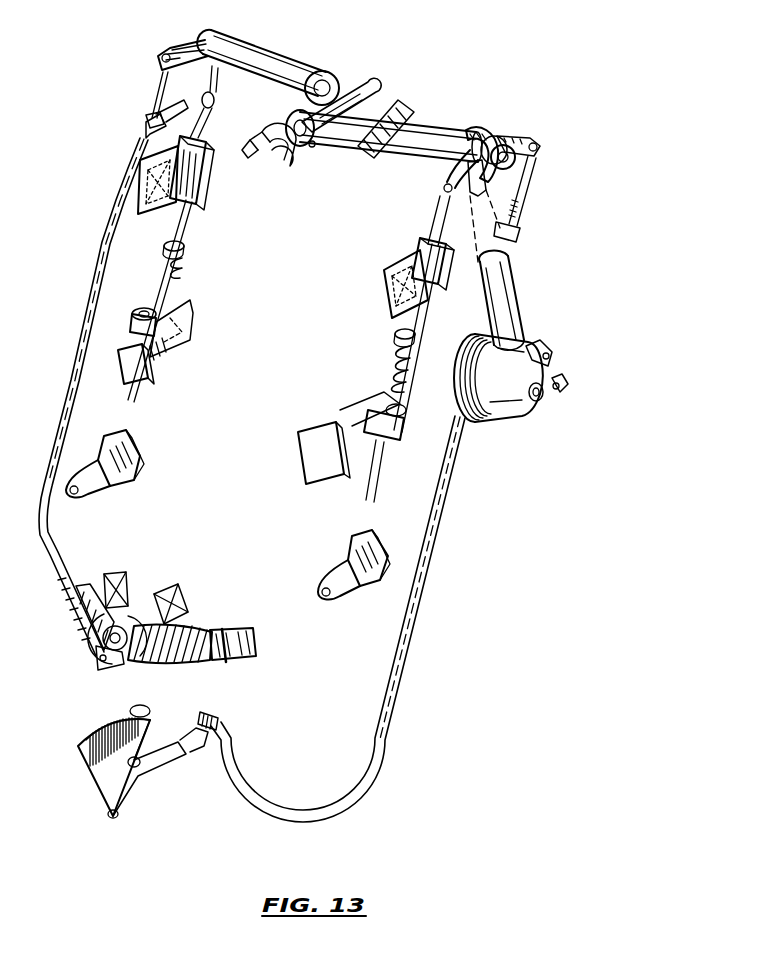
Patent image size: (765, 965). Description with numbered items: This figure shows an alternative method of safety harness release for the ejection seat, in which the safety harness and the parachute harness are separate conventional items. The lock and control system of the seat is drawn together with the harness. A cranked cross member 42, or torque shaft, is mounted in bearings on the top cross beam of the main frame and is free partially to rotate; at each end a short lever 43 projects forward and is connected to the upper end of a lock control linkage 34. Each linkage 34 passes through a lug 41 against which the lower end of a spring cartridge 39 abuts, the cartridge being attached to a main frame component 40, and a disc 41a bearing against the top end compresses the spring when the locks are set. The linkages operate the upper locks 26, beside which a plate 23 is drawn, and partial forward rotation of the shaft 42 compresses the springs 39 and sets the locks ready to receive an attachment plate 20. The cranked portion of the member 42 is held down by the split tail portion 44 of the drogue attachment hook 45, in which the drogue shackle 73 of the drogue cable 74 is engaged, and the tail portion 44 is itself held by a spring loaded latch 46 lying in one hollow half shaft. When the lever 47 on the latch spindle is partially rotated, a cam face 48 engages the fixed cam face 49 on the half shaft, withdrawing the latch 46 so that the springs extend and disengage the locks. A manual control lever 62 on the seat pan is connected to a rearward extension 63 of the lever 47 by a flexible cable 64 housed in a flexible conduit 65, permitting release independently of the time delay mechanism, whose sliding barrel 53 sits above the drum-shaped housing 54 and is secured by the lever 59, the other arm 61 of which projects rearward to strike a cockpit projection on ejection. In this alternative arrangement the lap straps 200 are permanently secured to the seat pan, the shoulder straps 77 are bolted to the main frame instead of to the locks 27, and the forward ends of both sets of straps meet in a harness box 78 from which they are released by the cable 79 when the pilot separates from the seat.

The attachment plate 20 is at (346, 566).
The plate 23 is at (156, 210).
The upper lock 26 is at (204, 178).
The second pair of locks 27 is at (136, 444).
The lock control linkage 34 is at (166, 300).
The spring cartridge 39 is at (174, 270).
The main frame component 40 is at (144, 380).
The lug 41 is at (138, 312).
The disc 41a is at (184, 250).
The cranked cross member 42 is at (272, 64).
The short lever 43 is at (170, 54).
The split tail portion 44 is at (345, 97).
The drogue attachment hook 45 is at (310, 138).
The spring loaded latch 46 is at (384, 104).
The lever 47 is at (488, 186).
The cam face 48 is at (484, 130).
The fixed cam face 49 is at (506, 143).
The sliding barrel 53 is at (506, 295).
The drum 54 is at (516, 410).
The lever 59 is at (546, 352).
The other arm 61 is at (560, 392).
The manual control lever 62 is at (150, 712).
The rearward extension 63 is at (524, 140).
The flexible cable 64 is at (520, 212).
The flexible conduit 65 is at (428, 582).
The shackle 73 is at (282, 160).
The drogue cable 74 is at (246, 154).
The shoulder straps 77 is at (170, 588).
The harness box 78 is at (120, 668).
The cable 79 is at (90, 304).
The lap straps 200 is at (228, 654).